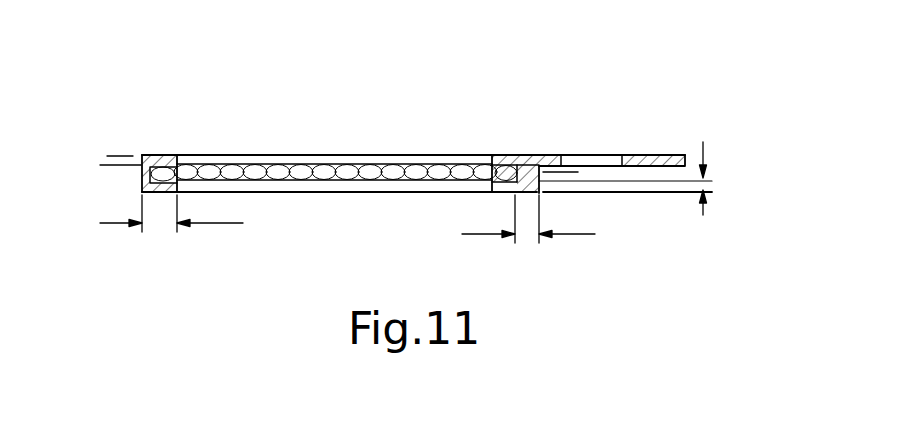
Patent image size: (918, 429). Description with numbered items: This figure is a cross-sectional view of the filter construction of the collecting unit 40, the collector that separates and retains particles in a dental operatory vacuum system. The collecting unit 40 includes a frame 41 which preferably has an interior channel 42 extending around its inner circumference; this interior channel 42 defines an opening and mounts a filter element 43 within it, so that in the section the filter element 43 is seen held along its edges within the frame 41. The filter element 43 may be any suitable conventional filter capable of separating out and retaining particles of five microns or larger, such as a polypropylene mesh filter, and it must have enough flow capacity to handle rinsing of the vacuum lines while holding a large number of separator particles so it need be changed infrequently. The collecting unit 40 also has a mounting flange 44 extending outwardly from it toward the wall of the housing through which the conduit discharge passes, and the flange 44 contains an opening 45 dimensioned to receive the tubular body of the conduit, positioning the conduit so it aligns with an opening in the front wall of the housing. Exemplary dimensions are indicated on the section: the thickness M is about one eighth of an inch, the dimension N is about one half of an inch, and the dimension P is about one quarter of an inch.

The collecting unit 40 is at (524, 98).
The frame 41 is at (145, 160).
The interior channel 42 is at (157, 170).
The filter element 43 is at (323, 177).
The mounting flange 44 is at (648, 154).
The opening 45 is at (600, 154).
The dimension M is at (107, 156).
The dimension N is at (161, 218).
The dimension P is at (528, 221).